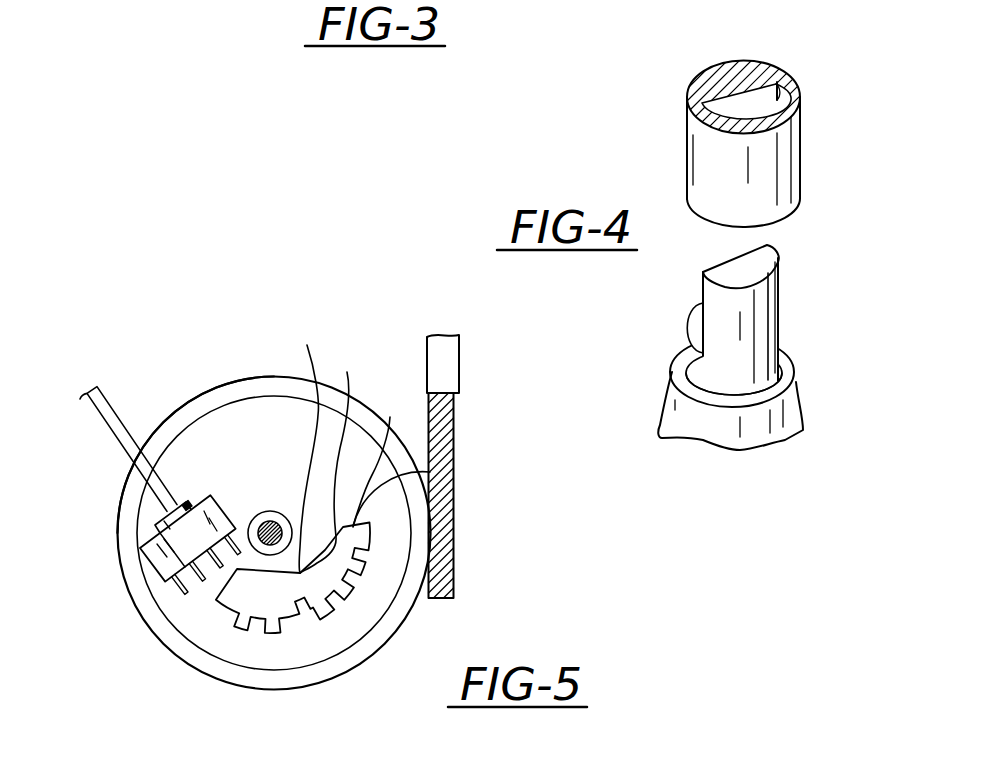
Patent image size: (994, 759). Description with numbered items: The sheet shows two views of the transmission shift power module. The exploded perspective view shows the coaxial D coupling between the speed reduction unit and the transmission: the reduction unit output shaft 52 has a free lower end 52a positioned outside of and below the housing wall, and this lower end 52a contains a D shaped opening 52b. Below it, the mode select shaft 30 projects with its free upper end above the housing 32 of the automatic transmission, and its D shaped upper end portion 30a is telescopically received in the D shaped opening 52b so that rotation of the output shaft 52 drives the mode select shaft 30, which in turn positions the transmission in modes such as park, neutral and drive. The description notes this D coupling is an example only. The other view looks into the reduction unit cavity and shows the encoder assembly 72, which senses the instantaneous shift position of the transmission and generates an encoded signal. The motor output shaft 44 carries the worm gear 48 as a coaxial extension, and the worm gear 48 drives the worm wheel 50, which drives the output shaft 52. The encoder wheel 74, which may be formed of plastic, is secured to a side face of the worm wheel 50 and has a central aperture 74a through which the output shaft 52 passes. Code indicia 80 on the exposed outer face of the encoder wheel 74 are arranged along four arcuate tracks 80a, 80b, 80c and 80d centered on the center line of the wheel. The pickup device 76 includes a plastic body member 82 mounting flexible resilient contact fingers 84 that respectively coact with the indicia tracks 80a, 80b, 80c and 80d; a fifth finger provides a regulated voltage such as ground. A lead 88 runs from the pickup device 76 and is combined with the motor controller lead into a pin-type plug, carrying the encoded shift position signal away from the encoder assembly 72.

In FIG. 3, the free lower end 52a is at (688, 139).
In FIG. 3, the D shaped opening 52b is at (773, 81).
In FIG. 4, the mode select shaft 30 is at (685, 347).
In FIG. 4, the D shaped upper end portion 30a is at (780, 303).
In FIG. 4, the housing 32 is at (802, 405).
In FIG. 5, the worm wheel 50 is at (352, 672).
In FIG. 5, the encoder assembly 72 is at (158, 412).
In FIG. 5, the encoder wheel 74 is at (241, 414).
In FIG. 5, the central aperture 74a is at (273, 511).
In FIG. 5, the output shaft 52 is at (249, 525).
In FIG. 5, the code indicia 80 is at (240, 638).
In FIG. 5, the arcuate track 80a is at (430, 472).
In FIG. 5, the arcuate track 80b is at (386, 452).
In FIG. 5, the arcuate track 80c is at (338, 456).
In FIG. 5, the arcuate track 80d is at (318, 446).
In FIG. 5, the output shaft 44 is at (462, 380).
In FIG. 5, the worm gear 48 is at (457, 528).
In FIG. 5, the lead 88 is at (116, 438).
In FIG. 5, the plastic body member 82 is at (200, 498).
In FIG. 5, the pickup device 76 is at (150, 562).
In FIG. 5, the contact fingers 84 is at (187, 582).